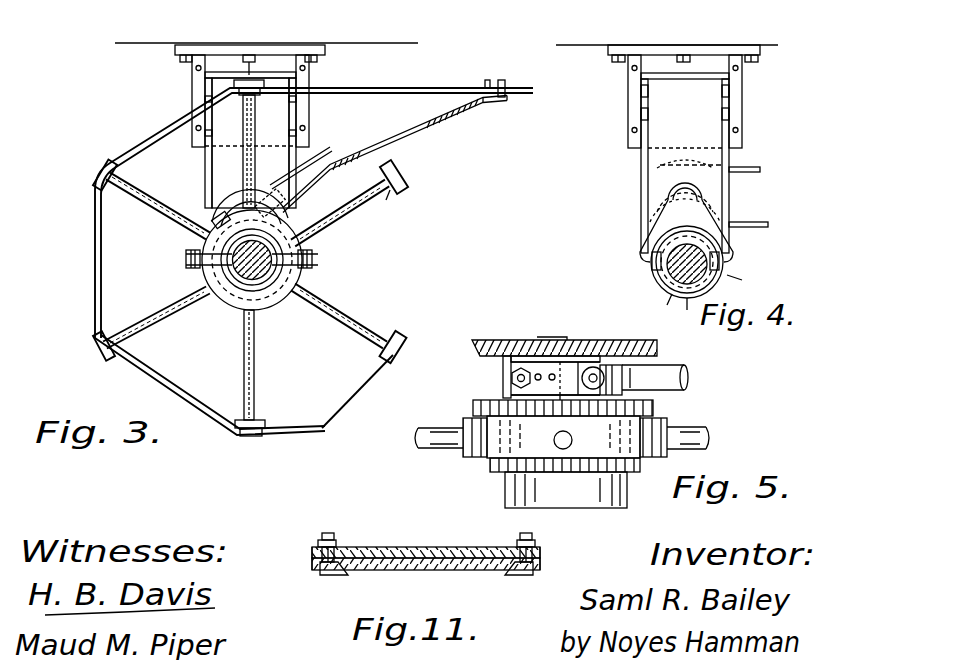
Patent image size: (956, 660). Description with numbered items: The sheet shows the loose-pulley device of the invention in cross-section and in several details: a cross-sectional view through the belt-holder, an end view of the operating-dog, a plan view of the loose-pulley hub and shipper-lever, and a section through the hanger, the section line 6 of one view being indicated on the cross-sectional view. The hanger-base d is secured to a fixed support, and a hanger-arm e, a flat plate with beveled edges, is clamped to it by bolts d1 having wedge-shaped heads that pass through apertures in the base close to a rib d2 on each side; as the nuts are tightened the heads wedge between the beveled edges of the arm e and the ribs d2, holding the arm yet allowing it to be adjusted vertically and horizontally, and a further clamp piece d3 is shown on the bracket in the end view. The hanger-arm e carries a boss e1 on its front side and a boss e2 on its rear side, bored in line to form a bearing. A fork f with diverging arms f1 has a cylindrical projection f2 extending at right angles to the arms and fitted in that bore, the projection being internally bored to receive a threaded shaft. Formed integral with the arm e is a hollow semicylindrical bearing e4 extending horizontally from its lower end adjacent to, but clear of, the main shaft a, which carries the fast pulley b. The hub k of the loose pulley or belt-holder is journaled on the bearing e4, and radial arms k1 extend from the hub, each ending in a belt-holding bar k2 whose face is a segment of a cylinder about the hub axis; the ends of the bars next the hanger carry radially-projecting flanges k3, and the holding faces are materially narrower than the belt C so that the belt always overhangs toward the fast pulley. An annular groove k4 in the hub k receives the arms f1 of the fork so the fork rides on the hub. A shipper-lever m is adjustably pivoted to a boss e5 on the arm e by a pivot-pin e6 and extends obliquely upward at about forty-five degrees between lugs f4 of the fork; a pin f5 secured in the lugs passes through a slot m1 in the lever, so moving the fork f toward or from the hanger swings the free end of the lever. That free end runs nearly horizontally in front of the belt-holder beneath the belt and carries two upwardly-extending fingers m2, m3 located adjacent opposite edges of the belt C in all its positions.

In FIG. 3, the hanger-base d is at (172, 47).
In FIG. 4, the hanger-base d is at (657, 45).
In FIG. 11, the hanger-base d is at (372, 547).
In FIG. 3, the bolt 6 is at (249, 55).
In FIG. 3, the bolt d1 is at (300, 80).
In FIG. 11, the bolt d1 is at (325, 580).
In FIG. 3, the rib d2 is at (309, 120).
In FIG. 4, the rib d2 is at (745, 92).
In FIG. 11, the rib d2 is at (312, 568).
In FIG. 4, the clamp piece d3 is at (745, 110).
In FIG. 3, the belt C is at (408, 82).
In FIG. 3, the shipper-lever m is at (402, 136).
In FIG. 5, the shipper-lever m is at (690, 378).
In FIG. 5, the slot m1 is at (628, 372).
In FIG. 3, the arm or finger m2 is at (488, 80).
In FIG. 3, the arm or finger m3 is at (506, 83).
In FIG. 3, the hanger-arm e is at (205, 158).
In FIG. 4, the hanger-arm e is at (660, 132).
In FIG. 5, the hanger-arm e is at (508, 340).
In FIG. 11, the hanger-arm e is at (368, 574).
In FIG. 3, the boss e1 is at (258, 186).
In FIG. 4, the boss e1 is at (680, 185).
In FIG. 5, the boss e1 is at (535, 360).
In FIG. 5, the boss e2 is at (592, 340).
In FIG. 3, the hollow semicylindrical bearing e4 is at (200, 272).
In FIG. 4, the hollow semicylindrical bearing e4 is at (658, 258).
In FIG. 5, the hollow semicylindrical bearing e4 is at (514, 493).
In FIG. 3, the boss e5 is at (205, 225).
In FIG. 3, the pivot-pin e6 is at (190, 248).
In FIG. 5, the pivot-pin e6 is at (512, 372).
In FIG. 3, the fork f is at (243, 200).
In FIG. 4, the fork f is at (690, 195).
In FIG. 5, the fork f is at (556, 418).
In FIG. 3, the diverging arm f1 is at (293, 213).
In FIG. 4, the diverging arm f1 is at (652, 258).
In FIG. 5, the diverging arm f1 is at (473, 405).
In FIG. 4, the cylindrical projection f2 is at (690, 210).
In FIG. 5, the cylindrical projection f2 is at (540, 398).
In FIG. 3, the lug f4 is at (306, 178).
In FIG. 5, the lug f4 is at (615, 340).
In FIG. 5, the pin f5 is at (590, 367).
In FIG. 3, the hub k is at (308, 277).
In FIG. 4, the hub k is at (676, 165).
In FIG. 5, the hub k is at (668, 432).
In FIG. 3, the radial arm k1 is at (355, 204).
In FIG. 5, the radial arm k1 is at (692, 430).
In FIG. 3, the belt-holding bar k2 is at (388, 203).
In FIG. 3, the radially-projecting flange k3 is at (405, 174).
In FIG. 4, the annular groove k4 is at (695, 303).
In FIG. 3, the main shaft a is at (226, 303).
In FIG. 4, the main shaft a is at (683, 281).
In FIG. 4, the fast pulley b is at (762, 170).